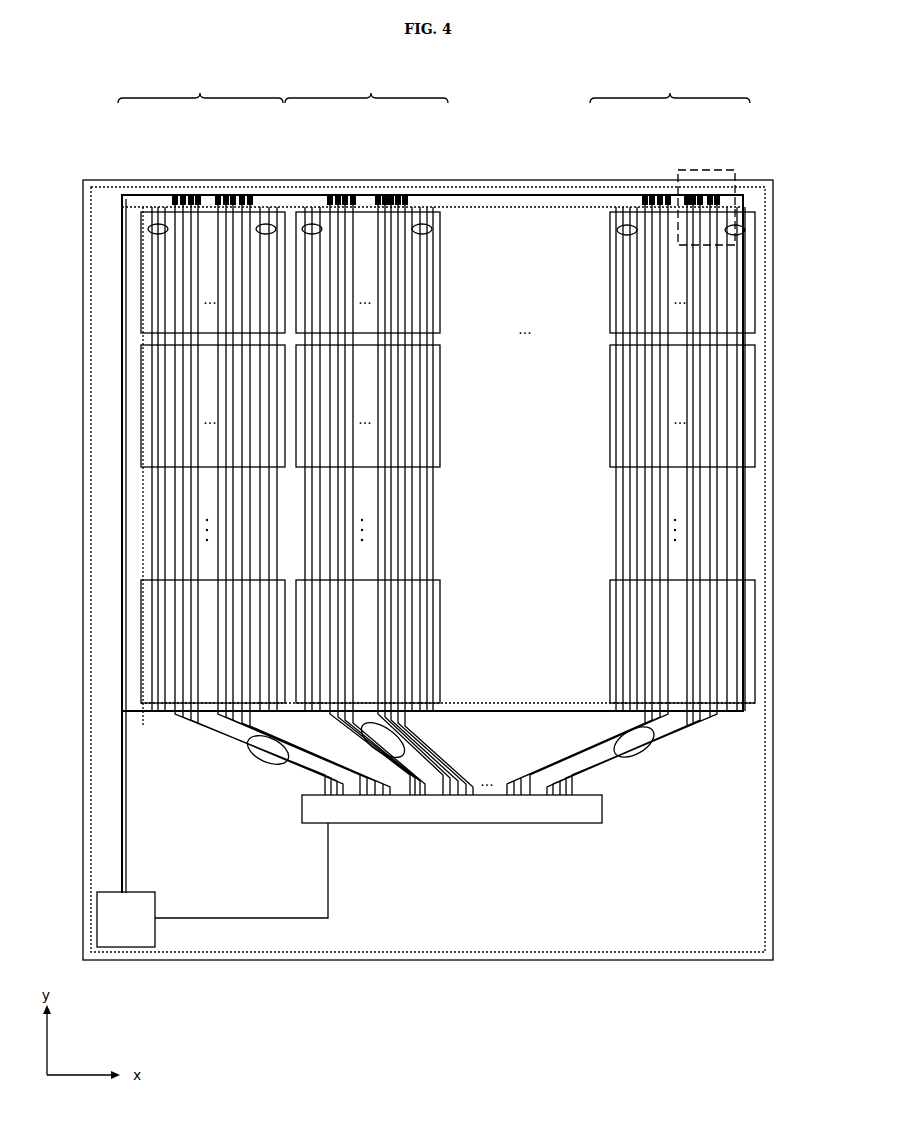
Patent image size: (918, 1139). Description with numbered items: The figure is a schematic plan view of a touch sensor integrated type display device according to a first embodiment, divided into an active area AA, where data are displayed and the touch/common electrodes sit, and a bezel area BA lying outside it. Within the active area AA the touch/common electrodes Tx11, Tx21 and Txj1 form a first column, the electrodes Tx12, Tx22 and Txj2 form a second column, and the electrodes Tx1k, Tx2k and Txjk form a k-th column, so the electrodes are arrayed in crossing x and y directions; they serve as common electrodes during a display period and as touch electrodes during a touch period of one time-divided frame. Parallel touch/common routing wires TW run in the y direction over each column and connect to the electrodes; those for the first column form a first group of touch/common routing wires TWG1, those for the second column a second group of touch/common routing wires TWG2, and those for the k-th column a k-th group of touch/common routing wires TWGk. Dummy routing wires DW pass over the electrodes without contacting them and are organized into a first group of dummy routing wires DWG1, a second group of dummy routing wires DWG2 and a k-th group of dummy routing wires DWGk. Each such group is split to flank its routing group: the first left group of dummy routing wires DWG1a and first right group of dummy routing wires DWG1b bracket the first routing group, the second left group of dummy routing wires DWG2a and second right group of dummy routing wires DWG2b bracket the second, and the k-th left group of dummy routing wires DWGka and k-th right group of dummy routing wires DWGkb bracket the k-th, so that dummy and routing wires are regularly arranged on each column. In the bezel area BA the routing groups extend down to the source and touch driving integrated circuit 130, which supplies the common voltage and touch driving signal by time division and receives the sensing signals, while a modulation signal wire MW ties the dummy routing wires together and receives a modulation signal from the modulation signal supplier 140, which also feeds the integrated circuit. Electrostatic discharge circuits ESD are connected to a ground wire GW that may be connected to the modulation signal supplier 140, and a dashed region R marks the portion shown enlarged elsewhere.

The source and touch driving integrated circuit 130 is at (450, 824).
The modulation signal supplier 140 is at (212, 885).
The active area AA is at (766, 257).
The bezel area BA is at (774, 780).
The ground wire GW is at (500, 194).
The modulation signal wire MW is at (533, 712).
The dummy routing wires DW is at (143, 481).
The touch/common routing wires TW is at (206, 738).
The first group of touch/common routing wires TWG1 is at (258, 768).
The second group of touch/common routing wires TWG2 is at (410, 742).
The k-th group of touch/common routing wires TWGk is at (643, 758).
The electrostatic discharge circuits ESD is at (216, 224).
The region R is at (706, 187).
The first group of dummy routing wires DWG1 is at (200, 90).
The first left group of dummy routing wires DWG1a is at (143, 211).
The first right group of dummy routing wires DWG1b is at (262, 211).
The second group of dummy routing wires DWG2 is at (366, 90).
The second left group of dummy routing wires DWG2a is at (307, 211).
The second right group of dummy routing wires DWG2b is at (418, 211).
The k-th group of dummy routing wires DWGk is at (670, 90).
The k-th left group of dummy routing wires DWGka is at (616, 211).
The k-th right group of dummy routing wires DWGkb is at (735, 211).
The touch/common electrode Tx11 is at (213, 272).
The touch/common electrode Tx12 is at (368, 272).
The touch/common electrode Tx1k is at (682, 272).
The touch/common electrode Tx21 is at (213, 406).
The touch/common electrode Tx22 is at (368, 406).
The touch/common electrode Tx2k is at (682, 406).
The touch/common electrode Txj1 is at (213, 641).
The touch/common electrode Txj2 is at (368, 641).
The touch/common electrode Txjk is at (682, 641).